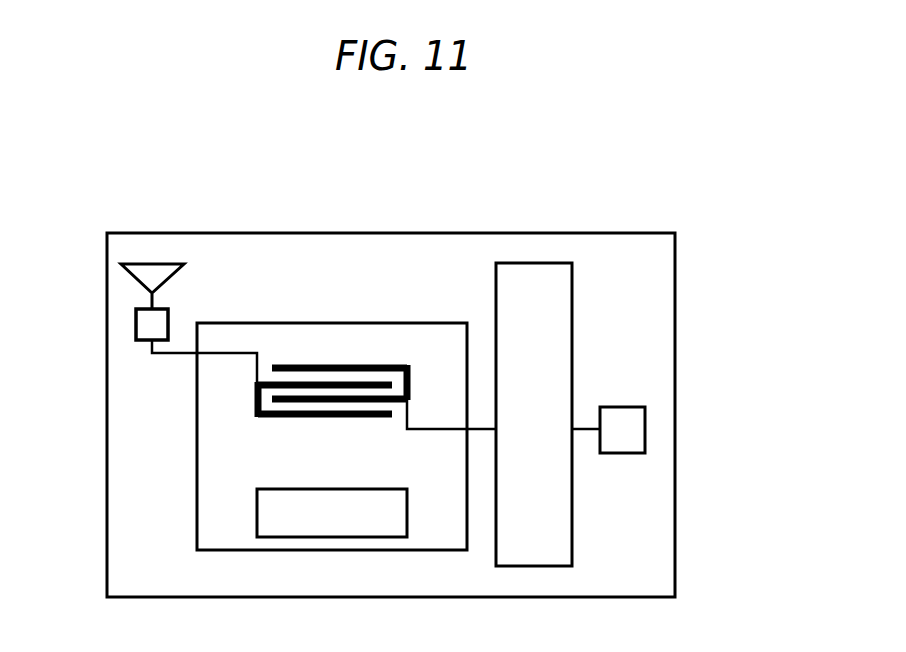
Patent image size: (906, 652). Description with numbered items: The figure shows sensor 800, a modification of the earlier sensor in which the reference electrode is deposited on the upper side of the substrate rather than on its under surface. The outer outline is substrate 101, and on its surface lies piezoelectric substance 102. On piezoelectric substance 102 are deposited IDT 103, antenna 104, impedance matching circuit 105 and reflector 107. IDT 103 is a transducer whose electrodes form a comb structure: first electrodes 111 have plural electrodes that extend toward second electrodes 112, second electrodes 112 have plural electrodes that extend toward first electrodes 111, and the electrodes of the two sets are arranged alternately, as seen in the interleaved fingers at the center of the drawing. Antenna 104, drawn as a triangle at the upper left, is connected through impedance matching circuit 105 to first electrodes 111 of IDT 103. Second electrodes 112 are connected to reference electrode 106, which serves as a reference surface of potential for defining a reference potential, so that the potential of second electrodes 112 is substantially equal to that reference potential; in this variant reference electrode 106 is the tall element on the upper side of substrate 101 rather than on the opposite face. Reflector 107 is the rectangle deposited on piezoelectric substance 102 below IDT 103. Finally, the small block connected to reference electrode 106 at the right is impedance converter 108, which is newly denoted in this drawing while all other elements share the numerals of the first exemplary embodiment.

The sensor 800 is at (698, 249).
The substrate 101 is at (423, 232).
The piezoelectric substance 102 is at (358, 322).
The IDT (Inter-digital Transducer) 103 is at (340, 378).
The first electrodes 111 is at (255, 405).
The second electrodes 112 is at (413, 366).
The antenna 104 is at (155, 264).
The impedance matching circuit 105 is at (136, 320).
The reference electrode 106 is at (546, 262).
The reflector 107 is at (343, 537).
The impedance converter 108 is at (645, 423).